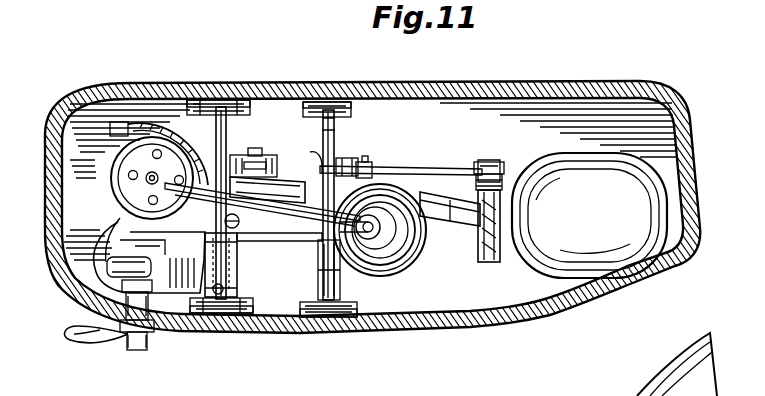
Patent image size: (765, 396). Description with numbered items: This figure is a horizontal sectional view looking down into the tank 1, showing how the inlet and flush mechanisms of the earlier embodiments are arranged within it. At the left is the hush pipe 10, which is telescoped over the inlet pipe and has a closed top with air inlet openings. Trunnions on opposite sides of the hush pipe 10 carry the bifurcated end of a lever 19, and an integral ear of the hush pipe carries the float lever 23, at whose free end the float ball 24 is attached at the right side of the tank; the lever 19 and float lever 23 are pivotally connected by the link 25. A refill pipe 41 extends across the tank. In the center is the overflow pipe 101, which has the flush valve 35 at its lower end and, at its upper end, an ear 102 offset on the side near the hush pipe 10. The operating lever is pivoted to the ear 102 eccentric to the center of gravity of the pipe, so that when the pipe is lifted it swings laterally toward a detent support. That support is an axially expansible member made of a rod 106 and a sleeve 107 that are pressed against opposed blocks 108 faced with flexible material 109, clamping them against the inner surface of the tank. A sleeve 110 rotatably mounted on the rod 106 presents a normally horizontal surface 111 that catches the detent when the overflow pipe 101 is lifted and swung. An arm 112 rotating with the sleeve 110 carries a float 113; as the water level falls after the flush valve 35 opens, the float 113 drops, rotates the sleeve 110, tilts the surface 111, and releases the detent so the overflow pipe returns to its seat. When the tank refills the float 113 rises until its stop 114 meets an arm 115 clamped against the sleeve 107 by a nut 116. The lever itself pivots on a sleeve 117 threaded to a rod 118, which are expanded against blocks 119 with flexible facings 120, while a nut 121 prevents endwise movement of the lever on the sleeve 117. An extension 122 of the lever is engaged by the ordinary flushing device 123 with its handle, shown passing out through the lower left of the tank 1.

The tank 1 is at (500, 90).
The hush pipe 10 is at (118, 182).
The lever 19 is at (266, 166).
The float lever 23 is at (456, 212).
The float ball 24 is at (589, 215).
The link 25 is at (276, 191).
The flush valve 35 is at (412, 268).
The refill pipe 41 is at (396, 175).
The overflow pipe 101 is at (408, 246).
The ear 102 is at (262, 211).
The rod 106 is at (330, 300).
The sleeve 107 is at (335, 136).
The blocks 108 is at (352, 112).
The flexible material 109 is at (313, 111).
The sleeve 110 is at (318, 258).
The horizontal surface 111 is at (238, 265).
The arm 112 is at (470, 170).
The float 113 is at (496, 264).
The stop 114 is at (366, 162).
The arm 115 is at (352, 158).
The nut 116 is at (314, 158).
The sleeve 117 is at (230, 294).
The rod 118 is at (226, 126).
The blocks 119 is at (252, 102).
The flexible facings 120 is at (207, 99).
The nut 121 is at (233, 226).
The extension 122 is at (102, 258).
The flushing device 123 is at (96, 348).